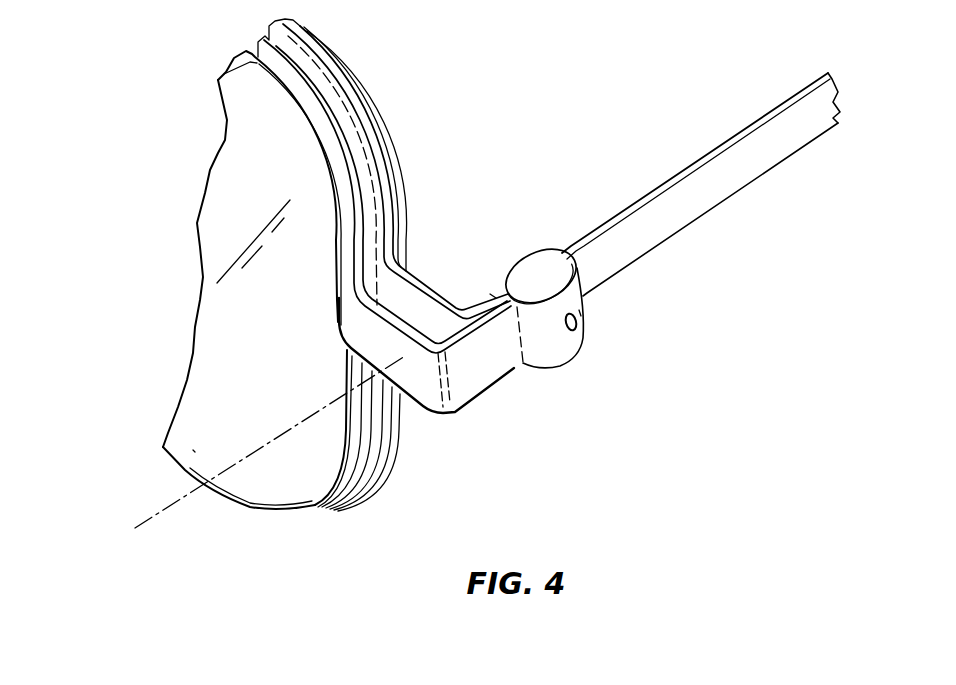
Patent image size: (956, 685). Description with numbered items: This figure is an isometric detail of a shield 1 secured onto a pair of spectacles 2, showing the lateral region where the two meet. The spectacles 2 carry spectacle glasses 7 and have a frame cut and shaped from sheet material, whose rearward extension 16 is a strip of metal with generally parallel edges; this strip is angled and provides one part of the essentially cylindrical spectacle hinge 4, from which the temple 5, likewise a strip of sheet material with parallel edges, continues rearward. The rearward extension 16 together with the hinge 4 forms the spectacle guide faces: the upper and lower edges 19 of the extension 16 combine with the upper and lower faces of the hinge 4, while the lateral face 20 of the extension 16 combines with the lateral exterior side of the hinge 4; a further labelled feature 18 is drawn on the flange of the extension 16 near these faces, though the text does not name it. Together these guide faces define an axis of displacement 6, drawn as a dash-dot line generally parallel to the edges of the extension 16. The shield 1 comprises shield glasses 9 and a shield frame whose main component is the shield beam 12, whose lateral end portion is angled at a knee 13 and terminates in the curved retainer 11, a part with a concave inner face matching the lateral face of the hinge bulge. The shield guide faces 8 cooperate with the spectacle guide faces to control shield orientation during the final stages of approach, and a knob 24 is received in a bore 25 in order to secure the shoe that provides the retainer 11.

The shield 1 is at (128, 223).
The spectacles 2 is at (431, 96).
The spectacle hinge 4 is at (563, 242).
The temple 5 is at (715, 185).
The axis of displacement 6 is at (147, 497).
The spectacle glasses 7 is at (391, 447).
The shield guide faces 8 is at (543, 249).
The shield glasses 9 is at (232, 183).
The retainer 11 is at (604, 282).
The shield beam 12 is at (395, 264).
The knee 13 is at (443, 414).
The rearward extension 16 is at (497, 370).
The flange 18 is at (428, 286).
The upper and lower edges 19 is at (495, 297).
The lateral face 20 is at (471, 300).
The knob 24 is at (581, 313).
The bore 25 is at (578, 326).